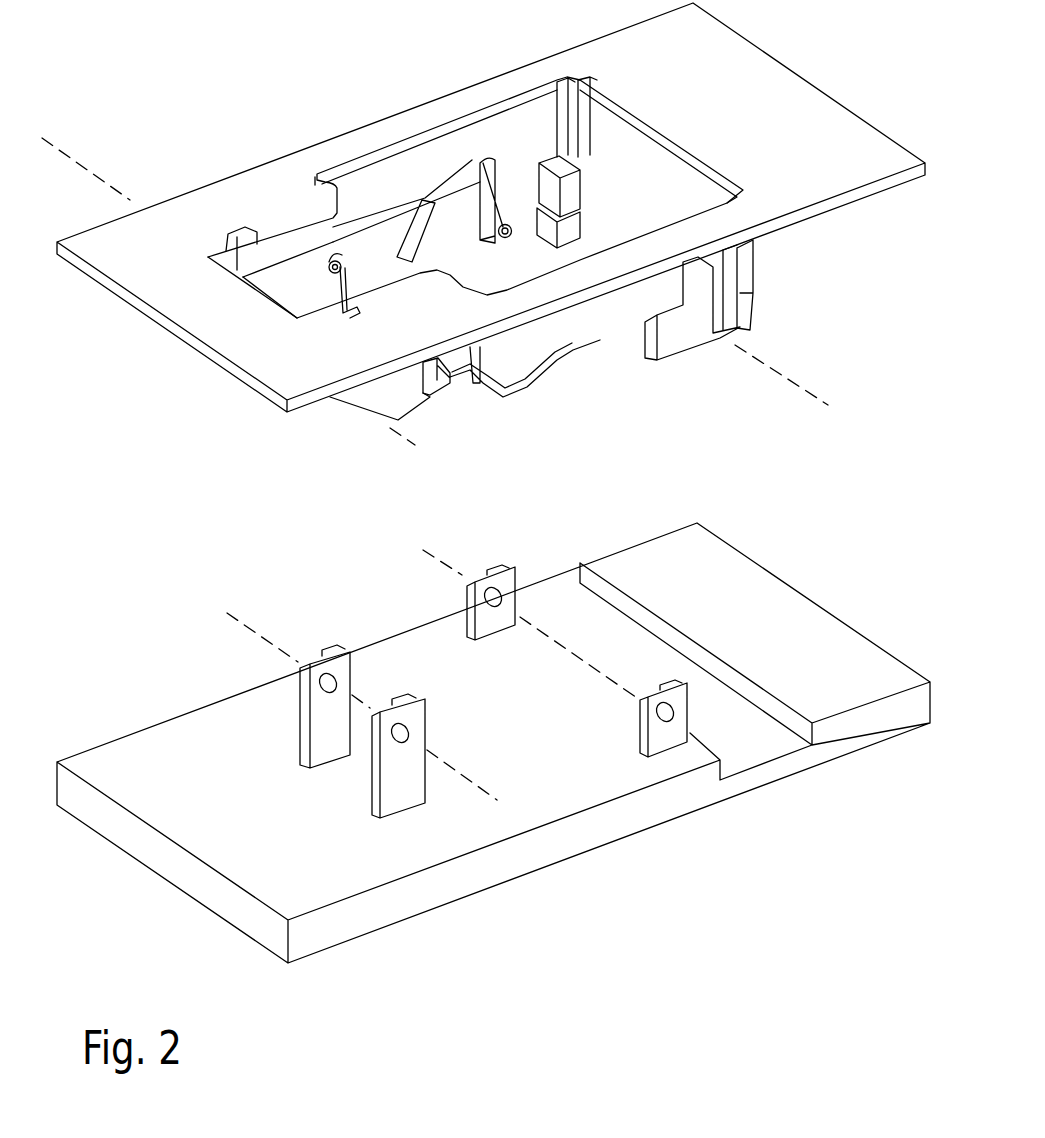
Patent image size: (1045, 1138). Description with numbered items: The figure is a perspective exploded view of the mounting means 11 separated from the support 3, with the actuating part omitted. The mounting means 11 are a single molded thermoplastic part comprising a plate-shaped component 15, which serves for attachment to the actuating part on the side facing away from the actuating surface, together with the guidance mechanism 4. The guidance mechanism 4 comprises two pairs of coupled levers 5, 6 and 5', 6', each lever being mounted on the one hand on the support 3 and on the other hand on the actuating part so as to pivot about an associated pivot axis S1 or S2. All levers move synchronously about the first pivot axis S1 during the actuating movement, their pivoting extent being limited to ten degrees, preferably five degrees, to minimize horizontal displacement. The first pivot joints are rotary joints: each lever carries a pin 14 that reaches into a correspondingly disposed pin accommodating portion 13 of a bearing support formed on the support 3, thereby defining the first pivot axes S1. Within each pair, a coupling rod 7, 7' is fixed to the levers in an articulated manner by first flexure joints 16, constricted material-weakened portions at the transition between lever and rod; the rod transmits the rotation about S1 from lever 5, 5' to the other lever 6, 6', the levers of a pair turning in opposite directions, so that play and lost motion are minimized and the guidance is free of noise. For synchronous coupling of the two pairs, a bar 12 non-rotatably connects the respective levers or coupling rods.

The support 3 is at (570, 840).
The guidance mechanism 4 is at (608, 360).
The lever 5 is at (699, 323).
The lever 5' is at (557, 127).
The lever 6 is at (380, 434).
The lever 6' is at (293, 211).
The coupling rod 7 is at (525, 388).
The coupling rod 7' is at (406, 160).
The mounting means 11 is at (483, 239).
The bar 12 is at (333, 300).
The pin accommodating portion 13 is at (320, 690).
The pin 14 is at (332, 262).
The plate-shaped component 15 is at (815, 86).
The first flexure joint 16 is at (473, 150).
The first pivot axis S1 is at (473, 787).
The second pivot axis S2 is at (72, 140).